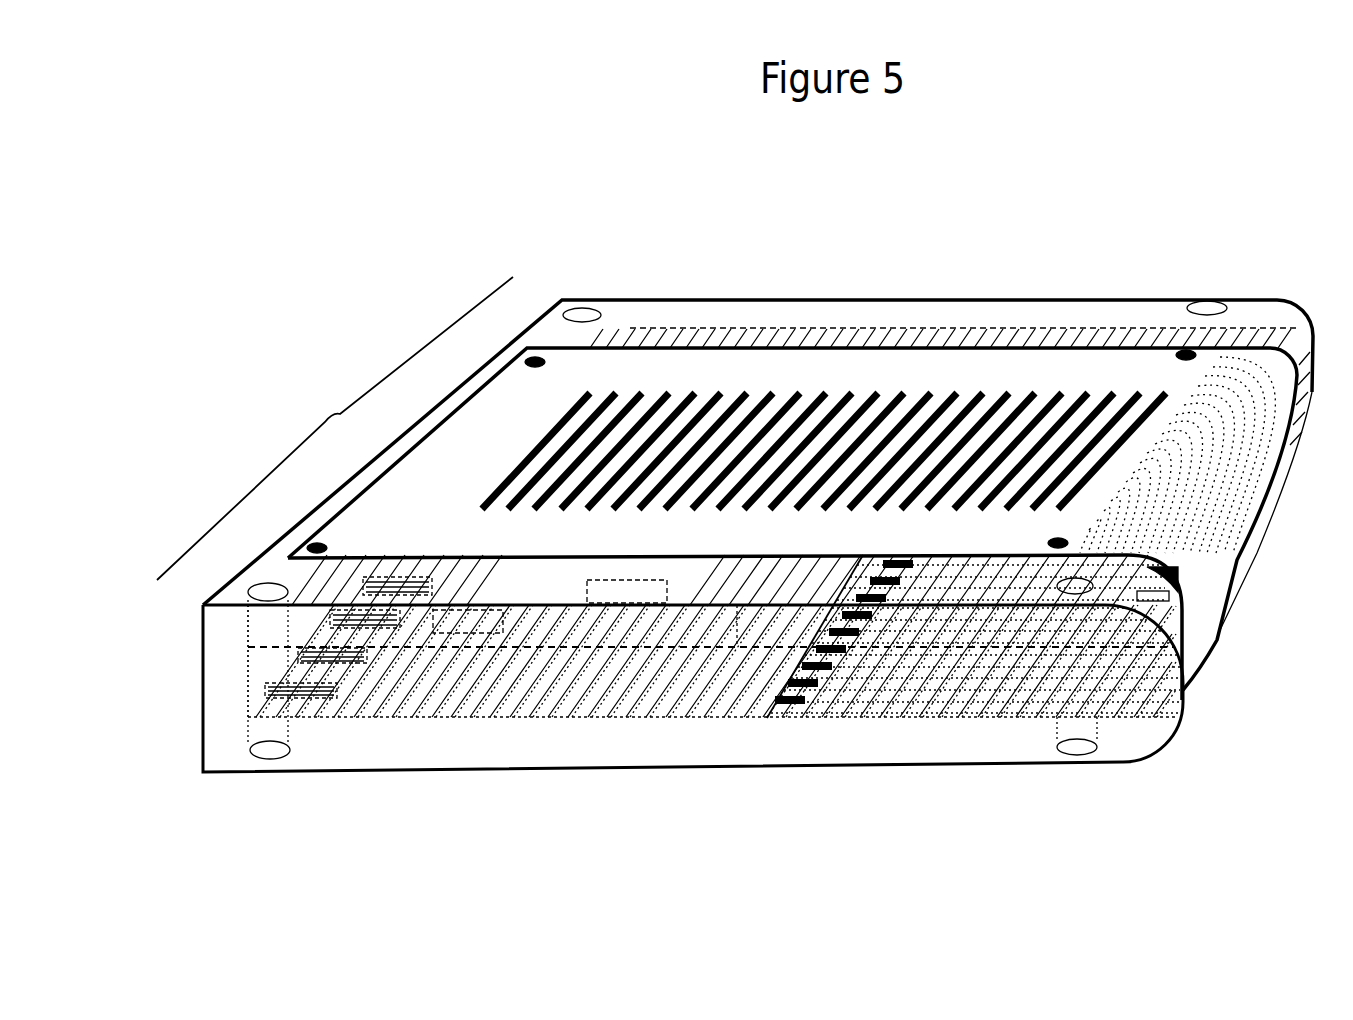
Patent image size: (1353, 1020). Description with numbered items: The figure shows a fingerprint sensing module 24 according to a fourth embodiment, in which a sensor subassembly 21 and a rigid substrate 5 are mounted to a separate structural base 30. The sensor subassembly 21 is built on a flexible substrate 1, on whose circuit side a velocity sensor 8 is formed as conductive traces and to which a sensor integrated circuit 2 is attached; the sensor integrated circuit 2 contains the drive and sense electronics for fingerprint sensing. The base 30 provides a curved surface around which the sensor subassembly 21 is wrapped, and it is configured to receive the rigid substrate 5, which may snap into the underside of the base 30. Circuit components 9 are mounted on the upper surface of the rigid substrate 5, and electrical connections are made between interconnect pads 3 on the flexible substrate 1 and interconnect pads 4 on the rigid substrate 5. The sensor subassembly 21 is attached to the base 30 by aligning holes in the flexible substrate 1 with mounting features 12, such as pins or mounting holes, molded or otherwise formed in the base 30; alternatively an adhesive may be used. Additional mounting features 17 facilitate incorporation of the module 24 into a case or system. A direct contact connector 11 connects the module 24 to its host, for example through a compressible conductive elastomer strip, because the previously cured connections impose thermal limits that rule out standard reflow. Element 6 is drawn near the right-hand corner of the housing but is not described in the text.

The flexible substrate 1 is at (288, 558).
The sensor integrated circuit 2 is at (1195, 622).
The interconnect pads 3 is at (800, 715).
The interconnect pads 4 is at (780, 713).
The rigid substrate 5 is at (245, 687).
The housing corner 6 is at (1150, 625).
The velocity sensor 8 is at (515, 512).
The circuit components 9 is at (470, 627).
The direct contact connector 11 is at (313, 700).
The mounting features 12 is at (1186, 350).
The mounting features 17 is at (583, 308).
The sensor subassembly 21 is at (1196, 493).
The fingerprint sensing module 24 is at (335, 428).
The structural base 30 is at (203, 772).